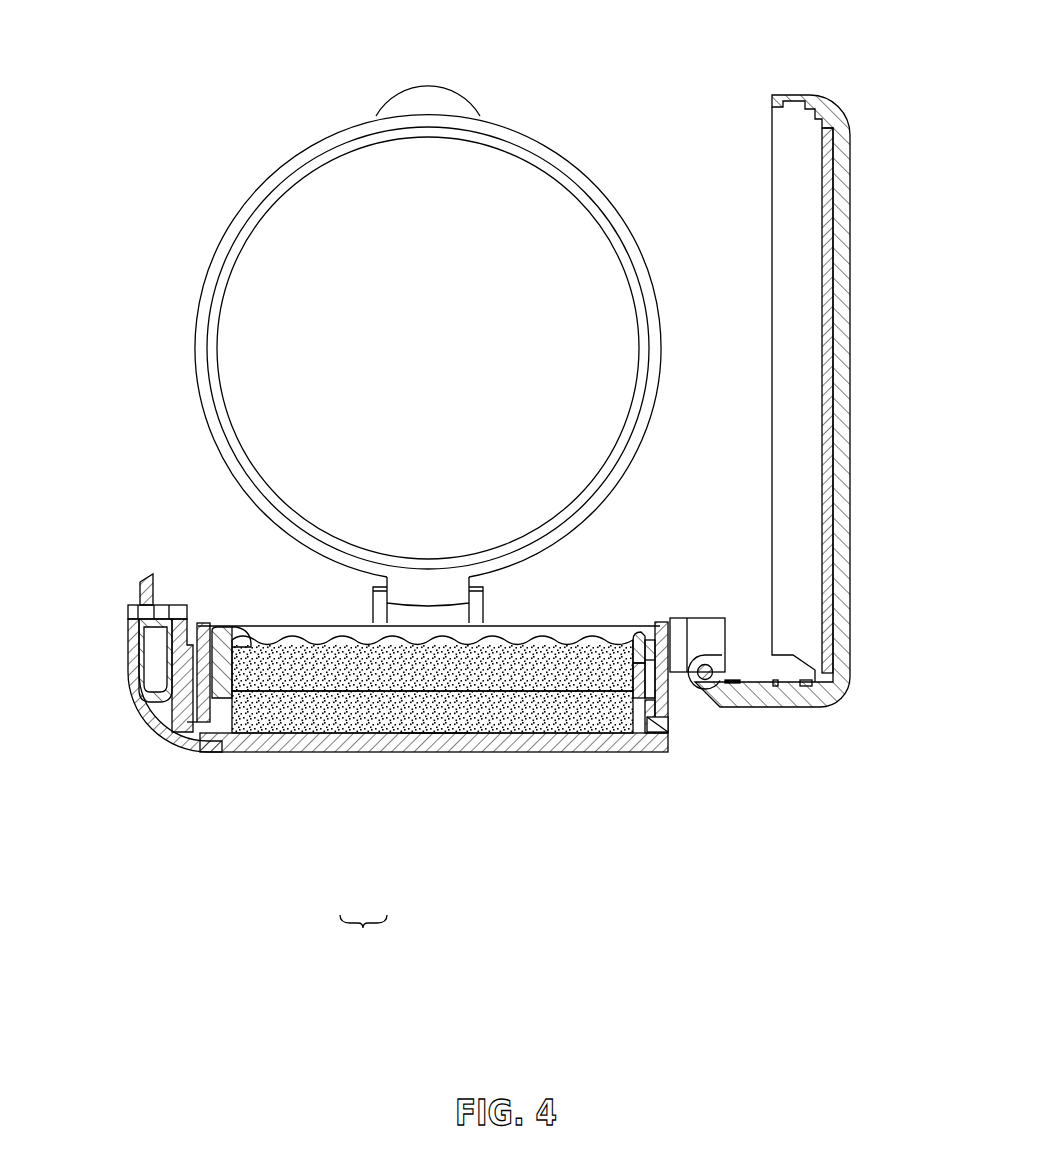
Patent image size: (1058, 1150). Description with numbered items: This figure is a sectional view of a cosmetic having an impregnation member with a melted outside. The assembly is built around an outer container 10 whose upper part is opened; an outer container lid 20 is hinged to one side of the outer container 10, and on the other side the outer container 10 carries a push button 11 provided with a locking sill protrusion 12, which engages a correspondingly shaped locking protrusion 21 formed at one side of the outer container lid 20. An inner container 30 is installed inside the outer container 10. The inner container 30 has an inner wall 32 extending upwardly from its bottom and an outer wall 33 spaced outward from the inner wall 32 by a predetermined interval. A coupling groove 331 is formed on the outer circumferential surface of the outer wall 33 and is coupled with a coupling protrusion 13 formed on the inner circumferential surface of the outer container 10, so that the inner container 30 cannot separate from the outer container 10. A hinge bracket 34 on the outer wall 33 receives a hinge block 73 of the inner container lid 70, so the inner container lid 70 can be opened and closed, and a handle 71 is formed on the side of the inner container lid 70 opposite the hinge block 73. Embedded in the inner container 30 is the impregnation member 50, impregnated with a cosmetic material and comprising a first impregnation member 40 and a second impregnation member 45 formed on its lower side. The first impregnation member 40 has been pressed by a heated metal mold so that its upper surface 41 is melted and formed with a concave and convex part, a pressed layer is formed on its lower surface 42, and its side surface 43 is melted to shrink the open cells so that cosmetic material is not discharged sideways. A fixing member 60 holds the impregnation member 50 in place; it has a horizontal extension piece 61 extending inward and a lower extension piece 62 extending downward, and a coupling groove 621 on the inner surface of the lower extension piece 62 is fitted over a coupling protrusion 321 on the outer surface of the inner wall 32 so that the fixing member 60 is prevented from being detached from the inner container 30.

The outer container 10 is at (162, 730).
The push button 11 is at (130, 667).
The locking sill protrusion 12 is at (140, 590).
The coupling protrusion 13 is at (668, 655).
The outer container lid 20 is at (850, 302).
The locking protrusion 21 is at (780, 118).
The inner container 30 is at (265, 762).
The inner wall 32 is at (637, 680).
The coupling protrusion 321 is at (648, 692).
The outer wall 33 is at (660, 640).
The coupling groove 331 is at (657, 735).
The hinge bracket 34 is at (373, 603).
The first impregnation member 40 is at (362, 690).
The upper surface 41 is at (470, 652).
The lower surface 42 is at (430, 745).
The side surface 43 is at (188, 735).
The second impregnation member 45 is at (398, 735).
The impregnation member 50 is at (363, 937).
The fixing member 60 is at (215, 625).
The horizontal extension piece 61 is at (243, 637).
The lower extension piece 62 is at (233, 678).
The coupling groove 621 is at (645, 680).
The inner container lid 70 is at (318, 150).
The handle 71 is at (428, 96).
The hinge block 73 is at (447, 592).